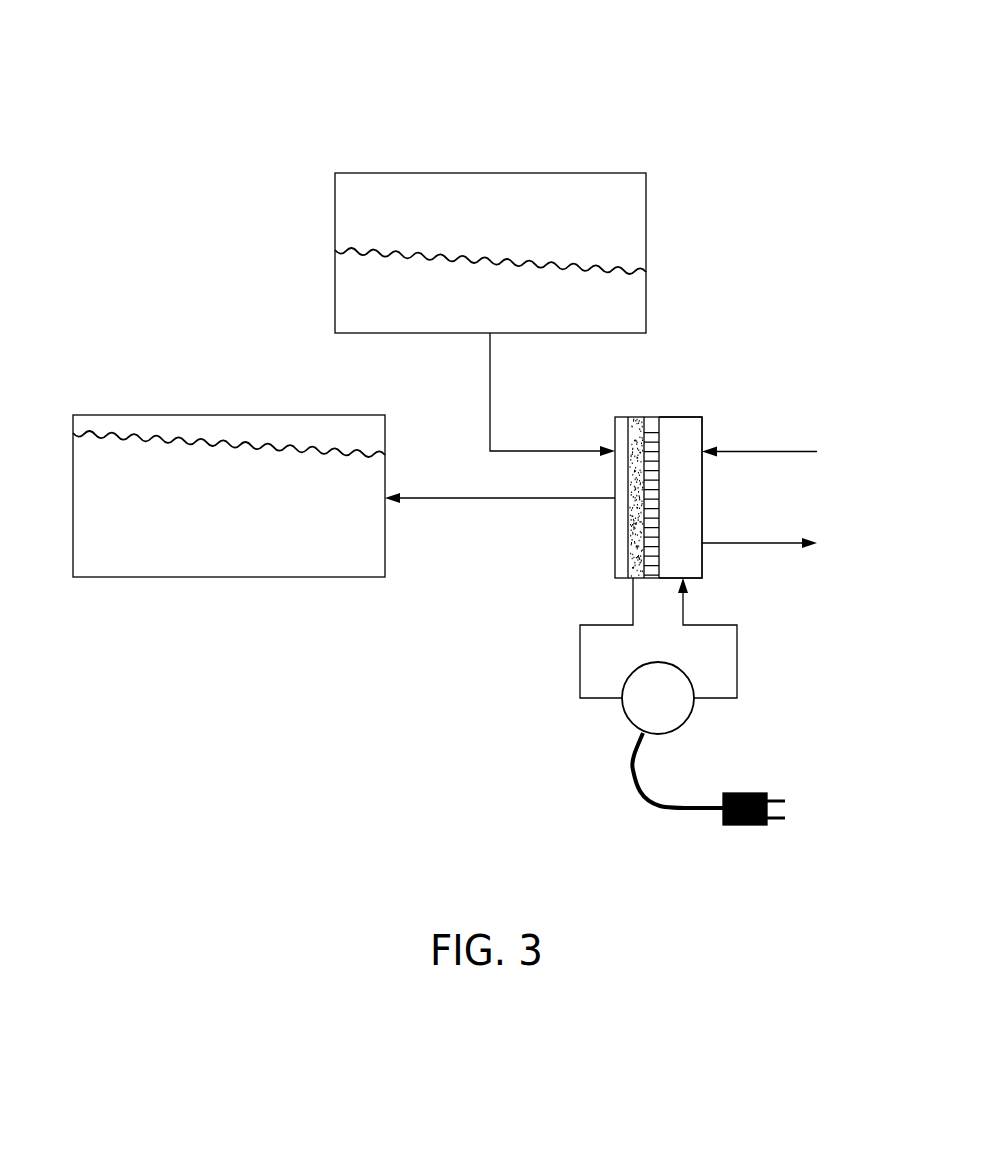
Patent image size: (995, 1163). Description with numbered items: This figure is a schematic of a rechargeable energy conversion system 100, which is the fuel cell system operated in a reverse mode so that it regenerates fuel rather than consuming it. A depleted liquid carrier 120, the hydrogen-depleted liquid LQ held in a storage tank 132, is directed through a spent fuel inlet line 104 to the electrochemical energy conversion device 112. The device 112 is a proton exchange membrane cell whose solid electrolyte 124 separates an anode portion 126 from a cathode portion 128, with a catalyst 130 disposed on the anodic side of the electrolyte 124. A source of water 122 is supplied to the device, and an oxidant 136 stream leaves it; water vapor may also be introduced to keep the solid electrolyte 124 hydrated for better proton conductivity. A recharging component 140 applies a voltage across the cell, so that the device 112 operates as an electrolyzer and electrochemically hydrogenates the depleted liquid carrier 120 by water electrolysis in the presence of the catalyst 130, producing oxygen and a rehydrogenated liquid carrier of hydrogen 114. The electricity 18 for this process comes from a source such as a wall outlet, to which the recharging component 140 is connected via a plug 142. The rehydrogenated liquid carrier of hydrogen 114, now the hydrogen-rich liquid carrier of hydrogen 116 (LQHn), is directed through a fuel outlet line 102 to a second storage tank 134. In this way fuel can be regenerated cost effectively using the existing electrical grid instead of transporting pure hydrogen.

The rechargeable energy conversion system 100 is at (148, 56).
The storage tank 132 is at (632, 215).
The depleted liquid carrier 120 is at (632, 322).
The spent fuel inlet line 104 is at (490, 392).
The storage tank 134 is at (235, 423).
The rehydrogenated liquid carrier of hydrogen 114 is at (263, 532).
The liquid carrier of hydrogen 116 is at (318, 563).
The fuel outlet line 102 is at (462, 498).
The electrochemical energy conversion device 112 is at (649, 493).
The anode portion 126 is at (618, 562).
The catalyst 130 is at (633, 420).
The solid electrolyte 124 is at (652, 420).
The cathode portion 128 is at (702, 568).
The source of water 122 is at (787, 450).
The oxidant 136 is at (787, 542).
The recharging component 140 is at (753, 690).
The electricity 18 is at (685, 723).
The plug 142 is at (633, 770).